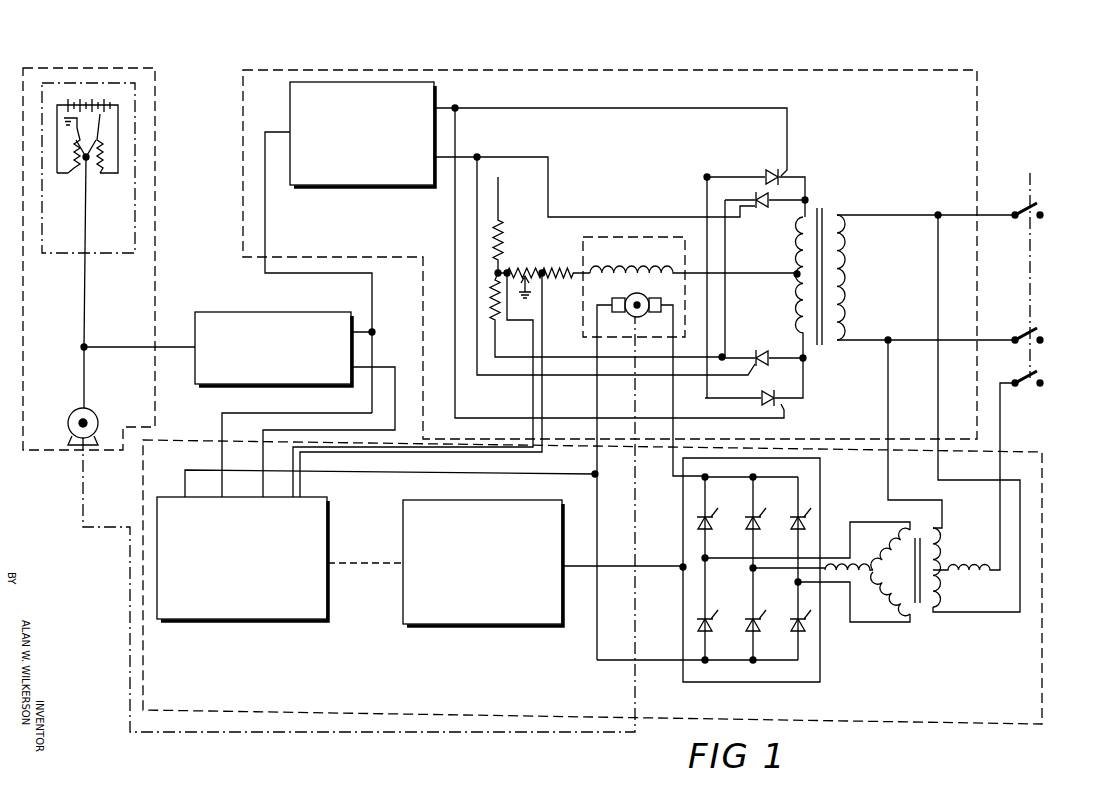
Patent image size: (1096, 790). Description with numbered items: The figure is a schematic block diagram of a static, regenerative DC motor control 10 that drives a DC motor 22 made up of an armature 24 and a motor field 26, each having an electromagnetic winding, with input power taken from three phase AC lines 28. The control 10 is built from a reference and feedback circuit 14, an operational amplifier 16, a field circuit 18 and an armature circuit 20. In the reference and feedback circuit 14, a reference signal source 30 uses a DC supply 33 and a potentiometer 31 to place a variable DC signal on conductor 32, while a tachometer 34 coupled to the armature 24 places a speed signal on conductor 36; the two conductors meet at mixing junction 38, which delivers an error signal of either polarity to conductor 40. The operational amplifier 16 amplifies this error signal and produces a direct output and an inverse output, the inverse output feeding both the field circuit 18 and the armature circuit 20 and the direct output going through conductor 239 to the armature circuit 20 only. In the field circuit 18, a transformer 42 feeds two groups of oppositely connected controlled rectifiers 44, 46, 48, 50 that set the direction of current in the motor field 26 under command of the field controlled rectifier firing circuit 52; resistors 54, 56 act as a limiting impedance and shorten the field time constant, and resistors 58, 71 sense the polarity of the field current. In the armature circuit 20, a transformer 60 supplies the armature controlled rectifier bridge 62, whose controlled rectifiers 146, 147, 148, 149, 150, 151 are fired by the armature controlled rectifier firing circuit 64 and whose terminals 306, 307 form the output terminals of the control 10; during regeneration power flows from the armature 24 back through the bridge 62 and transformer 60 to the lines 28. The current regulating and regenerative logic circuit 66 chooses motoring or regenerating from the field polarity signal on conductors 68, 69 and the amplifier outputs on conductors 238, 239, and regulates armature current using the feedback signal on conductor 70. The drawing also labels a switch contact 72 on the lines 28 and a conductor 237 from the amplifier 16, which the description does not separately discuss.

The DC motor control 10 is at (880, 733).
The reference and feedback circuit 14 is at (158, 122).
The operational amplifier 16 is at (291, 311).
The field circuit 18 is at (983, 101).
The armature circuit 20 is at (358, 710).
The DC motor 22 is at (648, 236).
The armature 24 is at (640, 300).
The motor field 26 is at (672, 270).
The three phase AC lines 28 is at (1040, 215).
The reference signal source 30 is at (138, 108).
The potentiometer 31 is at (101, 144).
The conductor 32 is at (82, 266).
The DC supply 33 is at (96, 92).
The tachometer 34 is at (93, 412).
The conductor 36 is at (84, 378).
The mixing junction 38 is at (84, 345).
The conductor 40 is at (140, 348).
The transformer 42 is at (829, 207).
The controlled rectifier 44 is at (771, 170).
The controlled rectifier 46 is at (783, 393).
The controlled rectifier 48 is at (759, 208).
The controlled rectifier 50 is at (766, 351).
The field controlled rectifier firing circuit 52 is at (362, 189).
The resistor 54 is at (504, 237).
The resistor 56 is at (492, 320).
The resistor 58 is at (577, 268).
The transformer 60 is at (890, 620).
The armature controlled rectifier bridge 62 is at (818, 673).
The armature controlled rectifier firing circuit 64 is at (503, 627).
The current regulating and regenerative logic circuit 66 is at (243, 626).
The conductor 68 is at (545, 398).
The conductor 69 is at (532, 396).
The conductor 70 is at (392, 475).
The resistor 71 is at (524, 271).
The switch contact 72 is at (1017, 212).
The controlled rectifier 146 is at (698, 528).
The controlled rectifier 147 is at (698, 631).
The controlled rectifier 148 is at (748, 532).
The controlled rectifier 149 is at (748, 634).
The controlled rectifier 150 is at (793, 532).
The controlled rectifier 151 is at (793, 634).
The amplifier output conductor 237 is at (266, 234).
The conductor 238 is at (220, 415).
The conductor 239 is at (266, 469).
The terminal 306 is at (704, 662).
The terminal 307 is at (698, 480).